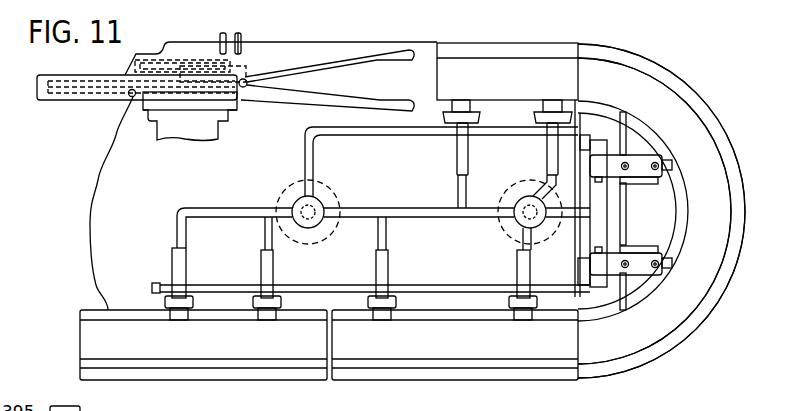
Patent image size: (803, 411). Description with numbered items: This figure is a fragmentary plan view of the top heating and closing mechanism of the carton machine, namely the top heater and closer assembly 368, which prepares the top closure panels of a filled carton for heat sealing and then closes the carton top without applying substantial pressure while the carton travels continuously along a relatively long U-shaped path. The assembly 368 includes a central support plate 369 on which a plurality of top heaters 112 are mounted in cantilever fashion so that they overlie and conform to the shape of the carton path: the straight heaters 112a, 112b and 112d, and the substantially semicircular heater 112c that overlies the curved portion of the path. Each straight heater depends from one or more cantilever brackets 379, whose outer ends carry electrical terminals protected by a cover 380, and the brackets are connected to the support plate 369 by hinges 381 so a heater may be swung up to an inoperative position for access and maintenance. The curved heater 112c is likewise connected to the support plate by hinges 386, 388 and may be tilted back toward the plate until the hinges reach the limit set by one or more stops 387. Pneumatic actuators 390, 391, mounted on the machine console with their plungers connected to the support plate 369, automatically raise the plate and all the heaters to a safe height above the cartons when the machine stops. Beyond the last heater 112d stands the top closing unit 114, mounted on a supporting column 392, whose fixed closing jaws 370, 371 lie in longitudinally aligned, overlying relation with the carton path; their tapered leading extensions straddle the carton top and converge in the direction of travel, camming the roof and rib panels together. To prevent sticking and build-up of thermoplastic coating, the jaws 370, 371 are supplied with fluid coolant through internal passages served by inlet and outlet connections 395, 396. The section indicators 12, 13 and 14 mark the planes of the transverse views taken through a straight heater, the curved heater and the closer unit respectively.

The top closing unit 114 is at (71, 108).
The coolant connection 395 is at (129, 96).
The supporting column 392 is at (160, 137).
The coolant connection 396 is at (246, 80).
The fixed closing jaw 370 is at (379, 62).
The fixed closing jaw 371 is at (381, 98).
The central support plate 369 is at (310, 146).
The pneumatic actuator 390 is at (338, 195).
The pneumatic actuator 391 is at (509, 194).
The hinge 381 is at (187, 265).
The cantilever bracket 379 is at (180, 318).
The stop 387 is at (579, 272).
The hinge 386 is at (642, 160).
The hinge 388 is at (645, 275).
The top heater and closer assembly 368 is at (672, 70).
The top heater 112 is at (74, 340).
The top heater 112a is at (263, 382).
The top heater 112b is at (465, 384).
The top heater 112c is at (693, 338).
The top heater 112d is at (489, 52).
The cover 380 is at (83, 322).
The section line 12- 12 is at (195, 238).
The section line 13- 13 is at (650, 185).
The section line 14- 14 is at (190, 23).